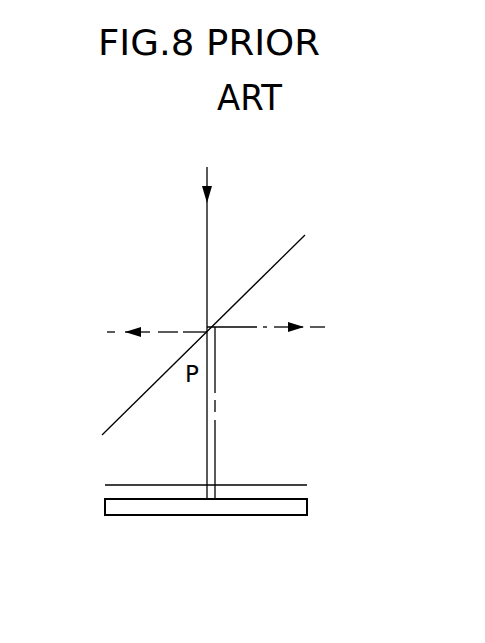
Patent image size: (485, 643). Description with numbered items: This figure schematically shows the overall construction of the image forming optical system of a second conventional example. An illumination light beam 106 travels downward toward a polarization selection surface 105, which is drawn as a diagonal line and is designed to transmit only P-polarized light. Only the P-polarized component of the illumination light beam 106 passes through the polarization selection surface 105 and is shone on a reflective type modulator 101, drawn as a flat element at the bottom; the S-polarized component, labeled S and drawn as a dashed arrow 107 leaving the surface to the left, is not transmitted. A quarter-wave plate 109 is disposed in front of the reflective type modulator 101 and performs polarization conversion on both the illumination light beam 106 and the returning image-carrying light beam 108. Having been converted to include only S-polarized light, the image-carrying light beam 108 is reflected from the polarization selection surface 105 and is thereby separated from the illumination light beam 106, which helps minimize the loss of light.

The reflective type modulator 101 is at (280, 515).
The polarization selection surface 105 is at (271, 267).
The illumination light beam 106 is at (207, 232).
The S-polarized reflected light 107 is at (183, 332).
The image-carrying light beam 108 is at (217, 378).
The quarter-wave plate 109 is at (285, 485).